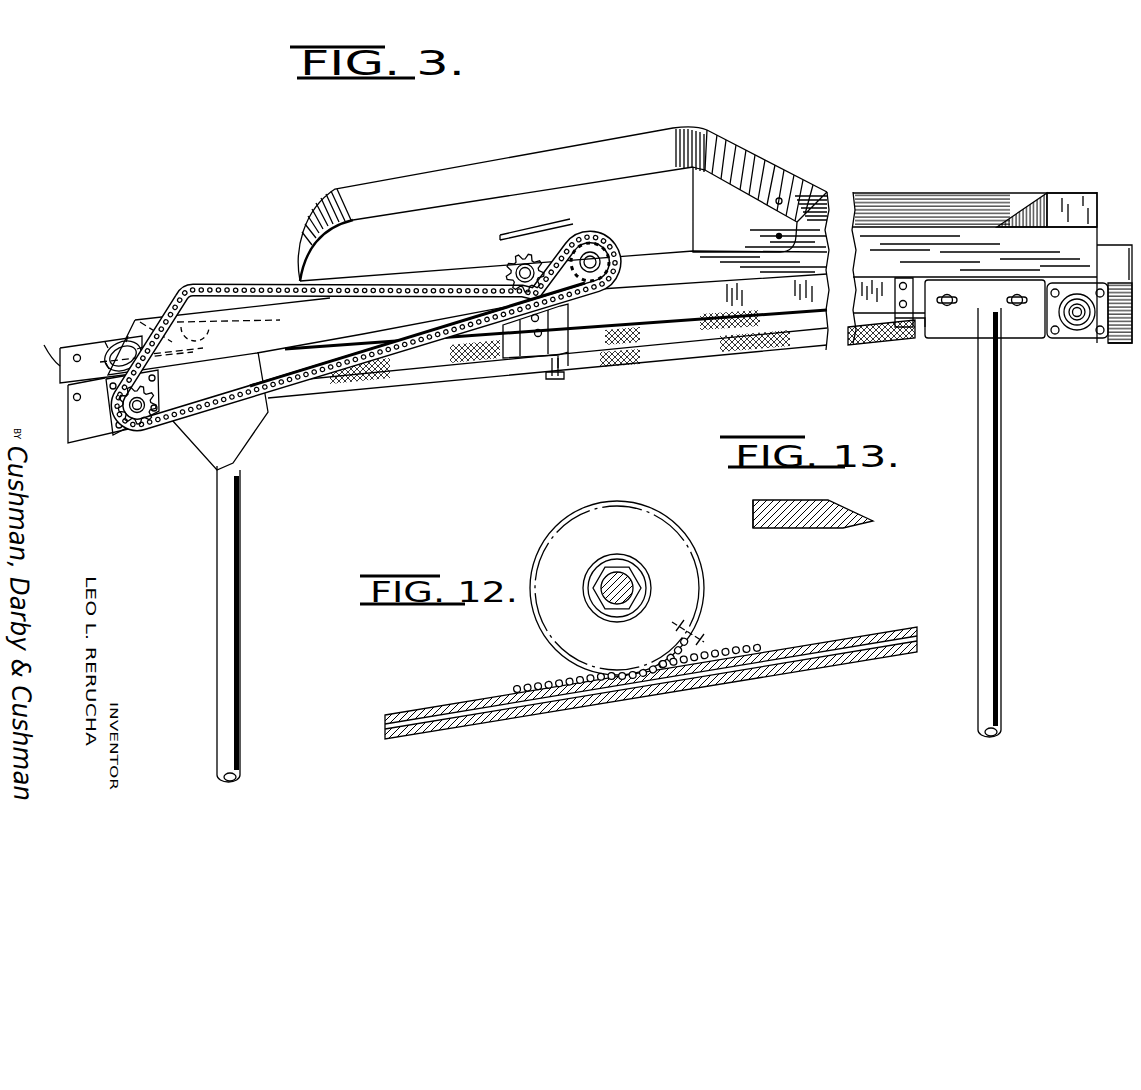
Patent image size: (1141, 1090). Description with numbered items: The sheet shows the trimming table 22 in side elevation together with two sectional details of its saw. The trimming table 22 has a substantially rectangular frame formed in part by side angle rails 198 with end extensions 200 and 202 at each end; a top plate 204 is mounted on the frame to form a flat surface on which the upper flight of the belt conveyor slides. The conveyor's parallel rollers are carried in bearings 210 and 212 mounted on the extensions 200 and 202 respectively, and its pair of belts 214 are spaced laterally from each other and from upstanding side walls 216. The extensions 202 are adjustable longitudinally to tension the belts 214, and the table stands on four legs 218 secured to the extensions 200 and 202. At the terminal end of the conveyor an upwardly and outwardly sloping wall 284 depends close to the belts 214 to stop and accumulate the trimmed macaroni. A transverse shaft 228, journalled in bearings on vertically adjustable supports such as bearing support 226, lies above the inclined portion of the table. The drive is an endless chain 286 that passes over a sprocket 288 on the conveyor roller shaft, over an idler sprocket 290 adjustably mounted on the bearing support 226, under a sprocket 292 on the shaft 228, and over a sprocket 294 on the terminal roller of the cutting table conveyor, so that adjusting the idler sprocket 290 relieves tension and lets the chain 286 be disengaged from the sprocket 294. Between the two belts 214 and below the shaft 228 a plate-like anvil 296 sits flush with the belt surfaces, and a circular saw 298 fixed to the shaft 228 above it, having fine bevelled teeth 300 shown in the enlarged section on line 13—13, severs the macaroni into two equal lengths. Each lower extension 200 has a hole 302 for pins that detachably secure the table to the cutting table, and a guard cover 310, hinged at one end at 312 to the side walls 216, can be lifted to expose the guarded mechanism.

In FIG. 12, the section line 13- 13 is at (688, 630).
In FIG. 3, the trimming table 22 is at (863, 188).
In FIG. 3, the side angle rails 198 is at (650, 292).
In FIG. 3, the end extensions 200 is at (92, 350).
In FIG. 3, the end extensions 202 is at (1022, 340).
In FIG. 12, the top plate 204 is at (812, 656).
In FIG. 3, the bearings 210 is at (105, 396).
In FIG. 3, the bearings 212 is at (1085, 340).
In FIG. 3, the belts 214 is at (682, 336).
In FIG. 12, the belts 214 is at (832, 645).
In FIG. 3, the side walls 216 is at (934, 226).
In FIG. 3, the legs 218 is at (243, 483).
In FIG. 3, the bearing support 226 is at (527, 240).
In FIG. 3, the transverse shaft 228 is at (575, 233).
In FIG. 12, the transverse shaft 228 is at (628, 590).
In FIG. 3, the sloping wall 284 is at (1032, 208).
In FIG. 3, the endless chain 286 is at (248, 284).
In FIG. 3, the sprocket 288 is at (147, 418).
In FIG. 3, the idler sprocket 290 is at (600, 290).
In FIG. 3, the sprocket 292 is at (510, 276).
In FIG. 3, the sprocket 294 is at (212, 322).
In FIG. 12, the anvil 296 is at (680, 660).
In FIG. 12, the circular saw 298 is at (628, 508).
In FIG. 13, the circular saw 298 is at (812, 530).
In FIG. 12, the bevelled teeth 300 is at (700, 652).
In FIG. 13, the bevelled teeth 300 is at (860, 517).
In FIG. 3, the hole 302 is at (44, 345).
In FIG. 3, the guard cover 310 is at (545, 158).
In FIG. 3, the hinge 312 is at (781, 197).